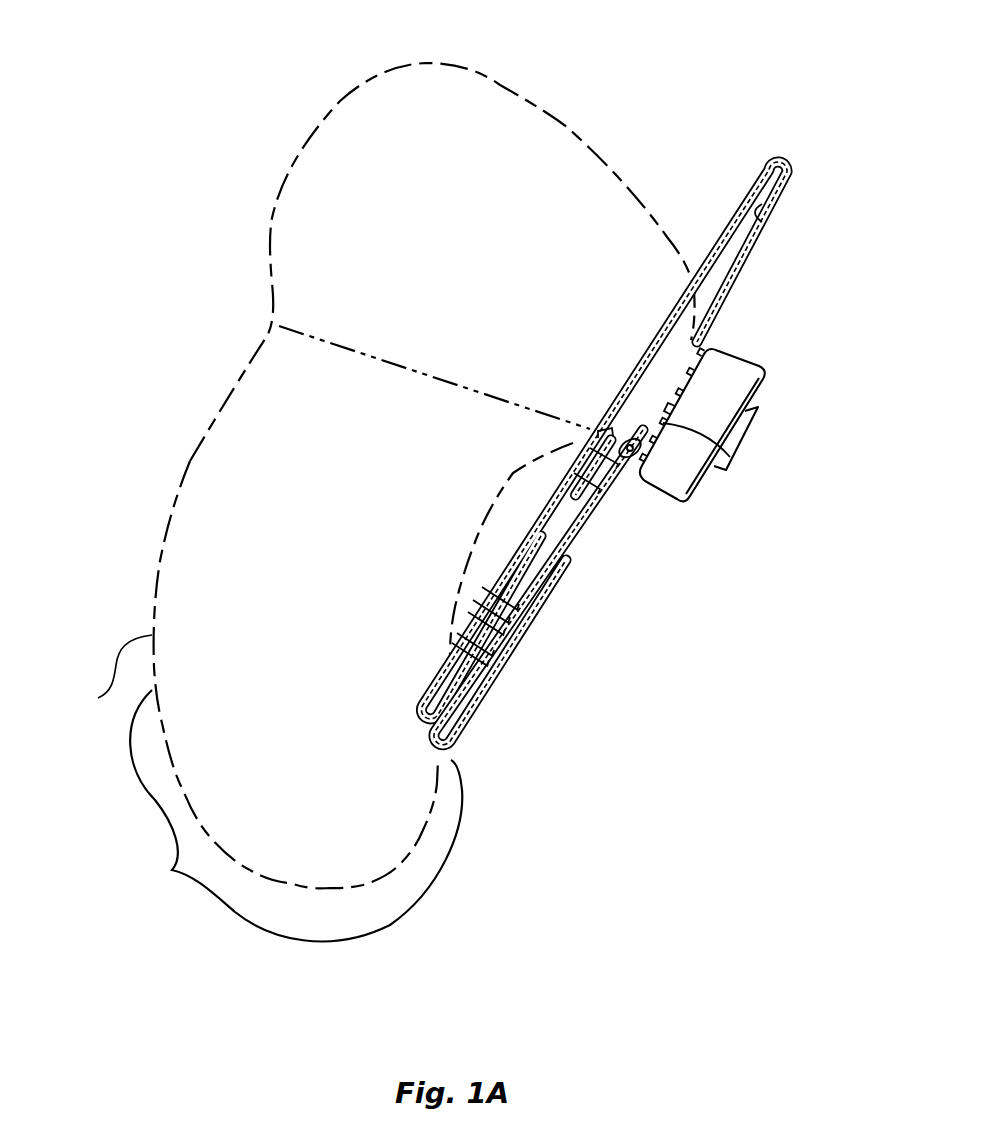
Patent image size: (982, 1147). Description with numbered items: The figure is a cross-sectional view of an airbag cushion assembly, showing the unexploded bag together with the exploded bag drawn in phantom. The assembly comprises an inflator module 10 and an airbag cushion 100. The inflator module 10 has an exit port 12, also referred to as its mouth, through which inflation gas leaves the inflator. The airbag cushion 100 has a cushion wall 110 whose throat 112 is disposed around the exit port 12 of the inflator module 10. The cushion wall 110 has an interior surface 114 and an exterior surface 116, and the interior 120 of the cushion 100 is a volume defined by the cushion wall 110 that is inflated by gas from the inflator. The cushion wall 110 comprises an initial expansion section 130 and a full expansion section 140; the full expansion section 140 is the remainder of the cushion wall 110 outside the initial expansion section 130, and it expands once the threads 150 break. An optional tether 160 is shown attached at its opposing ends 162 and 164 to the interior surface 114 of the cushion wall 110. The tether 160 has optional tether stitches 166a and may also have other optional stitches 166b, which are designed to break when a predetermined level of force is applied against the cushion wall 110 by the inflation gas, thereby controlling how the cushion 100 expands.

The airbag cushion 100 is at (774, 127).
The cushion wall 110 is at (787, 181).
The throat 112 is at (693, 340).
The interior surface 114 is at (766, 208).
The exterior surface 116 is at (755, 238).
The interior 120 is at (723, 253).
The inflator module 10 is at (782, 377).
The exit port 12 is at (730, 457).
The initial expansion section 130 is at (108, 678).
The full expansion section 140 is at (460, 697).
The threads 150 is at (525, 609).
The tether 160 is at (580, 500).
The tether end 162 is at (629, 441).
The tether end 164 is at (605, 427).
The tether stitches 166a is at (616, 465).
The other optional stitches 166b is at (599, 490).